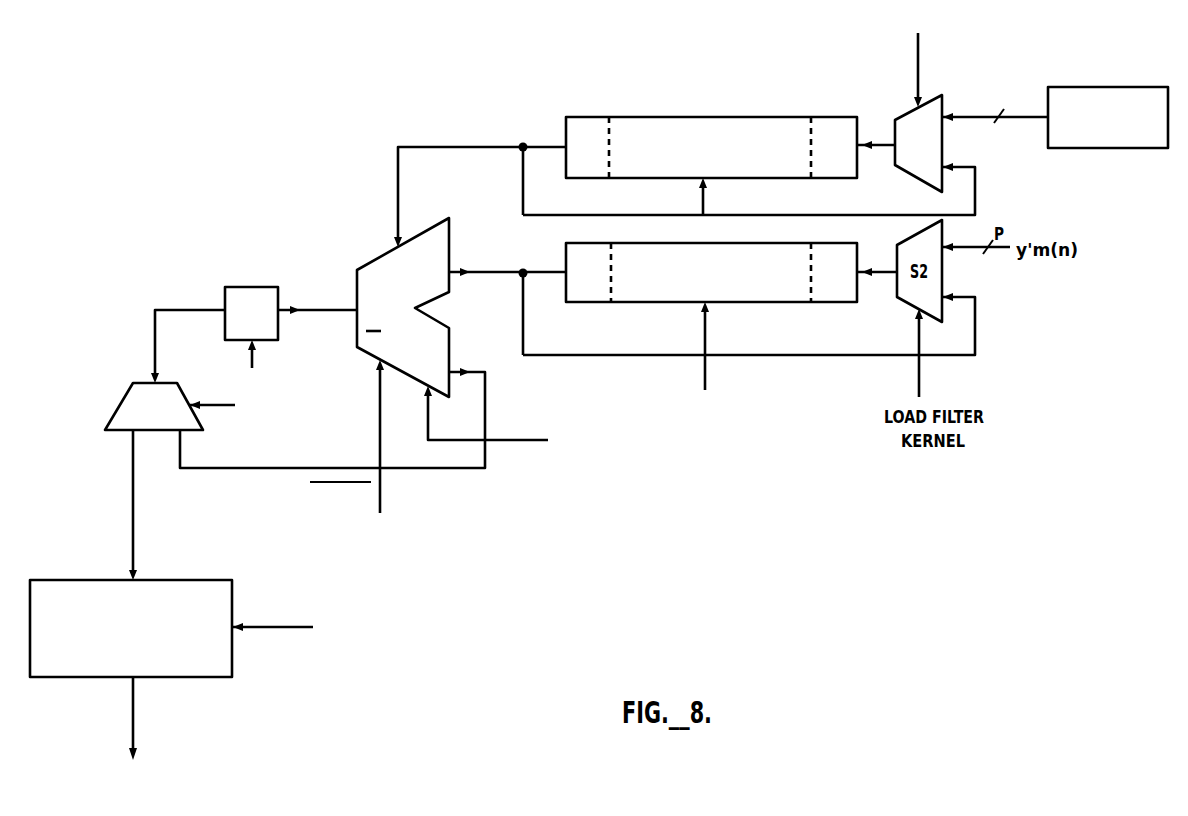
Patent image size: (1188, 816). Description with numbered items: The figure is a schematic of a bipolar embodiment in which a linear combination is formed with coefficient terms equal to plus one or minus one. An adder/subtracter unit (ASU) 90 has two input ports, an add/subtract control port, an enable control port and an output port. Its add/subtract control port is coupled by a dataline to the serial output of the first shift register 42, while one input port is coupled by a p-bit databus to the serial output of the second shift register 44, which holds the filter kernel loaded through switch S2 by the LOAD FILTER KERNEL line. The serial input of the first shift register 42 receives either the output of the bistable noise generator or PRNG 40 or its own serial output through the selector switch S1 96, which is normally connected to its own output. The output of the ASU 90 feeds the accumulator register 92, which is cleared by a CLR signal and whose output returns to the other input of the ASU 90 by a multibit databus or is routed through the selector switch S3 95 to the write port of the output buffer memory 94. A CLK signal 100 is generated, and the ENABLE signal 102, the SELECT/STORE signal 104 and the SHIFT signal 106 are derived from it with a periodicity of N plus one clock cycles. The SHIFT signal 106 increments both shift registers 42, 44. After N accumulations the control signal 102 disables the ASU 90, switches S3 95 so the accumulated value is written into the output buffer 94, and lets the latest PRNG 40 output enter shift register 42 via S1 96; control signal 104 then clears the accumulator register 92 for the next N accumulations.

The bistable noise generator (PRNG) 40 is at (1136, 87).
The first shift register 42 is at (727, 117).
The second shift register 44 is at (716, 303).
The adder/subtracter unit (ASU) 90 is at (358, 352).
The accumulator register 92 is at (247, 287).
The output buffer memory 94 is at (232, 585).
The selector switch S3 95 is at (123, 401).
The selector switch S1 96 is at (931, 97).
The CLK signal 100 is at (524, 419).
The ENABLE control signal 102 is at (918, 45).
The SELECT/STORE (CLR) control signal 104 is at (246, 368).
The SHIFT signal 106 is at (706, 385).